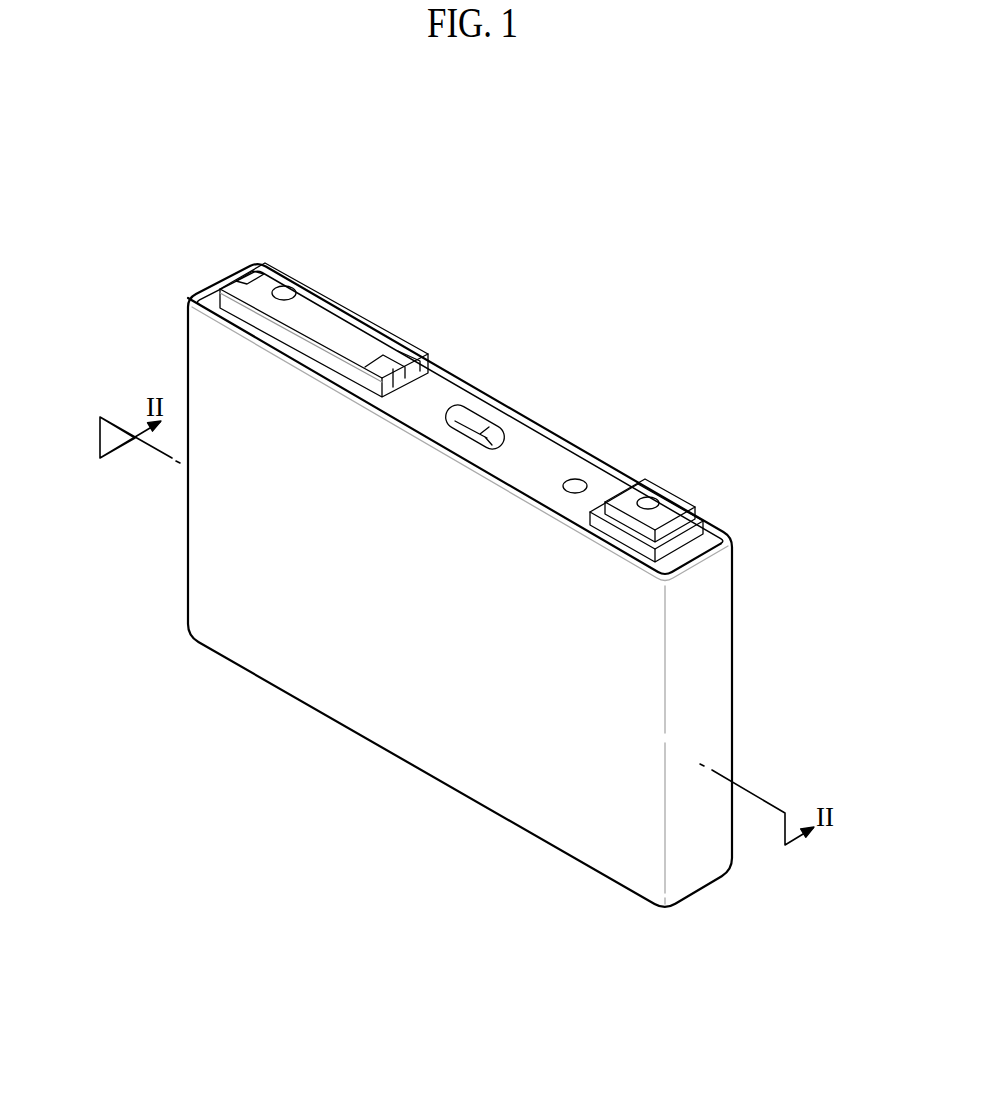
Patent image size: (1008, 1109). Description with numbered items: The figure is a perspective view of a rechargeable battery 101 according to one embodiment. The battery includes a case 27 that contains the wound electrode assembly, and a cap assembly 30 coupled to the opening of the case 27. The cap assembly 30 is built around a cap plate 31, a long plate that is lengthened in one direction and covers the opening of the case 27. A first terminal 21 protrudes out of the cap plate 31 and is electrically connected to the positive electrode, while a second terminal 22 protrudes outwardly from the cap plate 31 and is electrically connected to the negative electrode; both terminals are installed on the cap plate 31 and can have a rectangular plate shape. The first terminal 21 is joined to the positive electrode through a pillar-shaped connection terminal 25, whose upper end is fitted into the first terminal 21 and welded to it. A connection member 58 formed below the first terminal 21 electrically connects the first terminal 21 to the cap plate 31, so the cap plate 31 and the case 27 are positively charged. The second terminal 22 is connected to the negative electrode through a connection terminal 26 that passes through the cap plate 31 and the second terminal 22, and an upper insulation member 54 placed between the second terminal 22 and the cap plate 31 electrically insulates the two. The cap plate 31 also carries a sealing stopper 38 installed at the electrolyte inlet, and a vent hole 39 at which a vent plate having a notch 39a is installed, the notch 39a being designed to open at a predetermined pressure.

The rechargeable battery 101 is at (536, 218).
The case 27 is at (378, 712).
The cap assembly 30 is at (557, 436).
The second terminal 22 is at (314, 294).
The connection terminal 26 is at (285, 286).
The upper insulation member 54 is at (382, 328).
The cap plate 31 is at (433, 385).
The vent hole 39 is at (478, 416).
The notch 39a is at (486, 428).
The sealing stopper 38 is at (576, 479).
The connection member 58 is at (704, 513).
The first terminal 21 is at (675, 503).
The connection terminal 25 is at (649, 497).